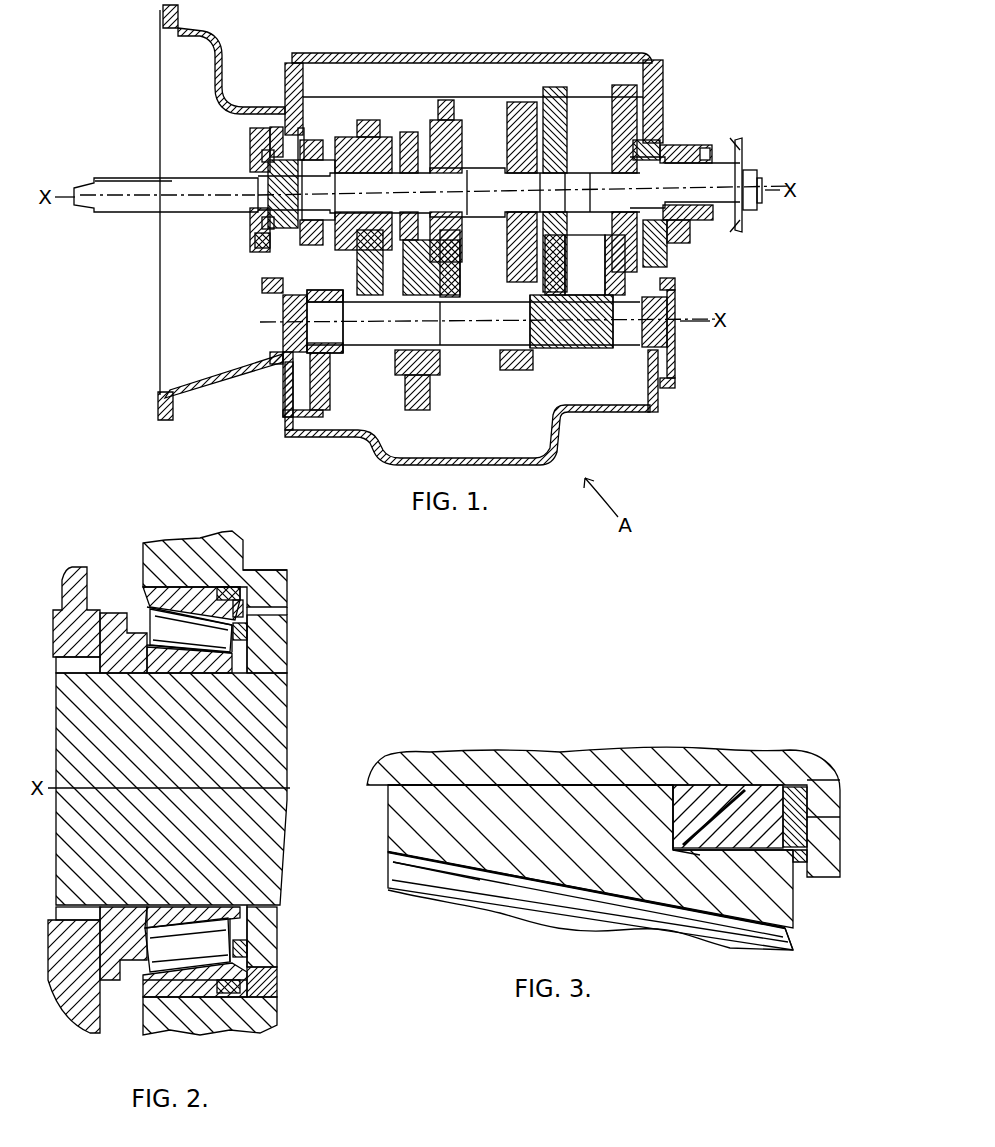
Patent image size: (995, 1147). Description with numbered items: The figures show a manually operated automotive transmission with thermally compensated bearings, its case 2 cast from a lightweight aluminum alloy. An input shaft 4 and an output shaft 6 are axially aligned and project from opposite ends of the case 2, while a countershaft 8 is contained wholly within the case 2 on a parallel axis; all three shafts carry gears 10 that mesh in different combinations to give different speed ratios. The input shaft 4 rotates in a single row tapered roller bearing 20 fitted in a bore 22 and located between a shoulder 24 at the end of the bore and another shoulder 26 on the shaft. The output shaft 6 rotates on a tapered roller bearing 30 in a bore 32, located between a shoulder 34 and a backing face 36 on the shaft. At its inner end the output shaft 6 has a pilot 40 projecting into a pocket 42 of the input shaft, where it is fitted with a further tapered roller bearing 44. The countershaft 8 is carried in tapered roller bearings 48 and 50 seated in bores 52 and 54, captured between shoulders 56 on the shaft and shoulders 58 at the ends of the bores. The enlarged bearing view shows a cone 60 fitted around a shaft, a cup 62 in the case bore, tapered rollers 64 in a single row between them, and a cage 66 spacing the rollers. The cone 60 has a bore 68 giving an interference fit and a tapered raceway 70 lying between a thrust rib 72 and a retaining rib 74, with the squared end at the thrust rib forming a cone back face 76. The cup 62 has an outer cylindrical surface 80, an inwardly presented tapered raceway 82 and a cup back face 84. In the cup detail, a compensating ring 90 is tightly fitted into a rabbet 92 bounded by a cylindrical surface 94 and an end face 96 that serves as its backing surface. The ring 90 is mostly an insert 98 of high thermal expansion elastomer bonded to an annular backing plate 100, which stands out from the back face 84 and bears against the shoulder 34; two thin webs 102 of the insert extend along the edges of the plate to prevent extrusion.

In FIG. 1, the case 2 is at (446, 48).
In FIG. 2, the case 2 is at (287, 577).
In FIG. 3, the case 2 is at (582, 752).
In FIG. 1, the input shaft 4 is at (103, 226).
In FIG. 1, the output shaft 6 is at (707, 170).
In FIG. 2, the output shaft 6 is at (67, 820).
In FIG. 1, the countershaft 8 is at (471, 343).
In FIG. 1, the gears 10 is at (297, 140).
In FIG. 1, the single row tapered roller bearing 20 is at (260, 237).
In FIG. 1, the bore 22 is at (277, 127).
In FIG. 1, the shoulder 24 is at (263, 147).
In FIG. 1, the shoulder 26 is at (303, 140).
In FIG. 1, the single row tapered roller bearing 30 is at (670, 243).
In FIG. 2, the single row tapered roller bearing 30 is at (266, 954).
In FIG. 1, the bore 32 is at (650, 140).
In FIG. 2, the bore 32 is at (187, 993).
In FIG. 3, the bore 32 is at (542, 787).
In FIG. 1, the shoulder 34 is at (658, 142).
In FIG. 2, the shoulder 34 is at (247, 573).
In FIG. 3, the shoulder 34 is at (807, 817).
In FIG. 1, the backing face 36 is at (625, 212).
In FIG. 2, the backing face 36 is at (115, 660).
In FIG. 1, the pilot 40 is at (327, 187).
In FIG. 1, the pocket 42 is at (260, 253).
In FIG. 1, the tapered roller bearing 44 is at (325, 143).
In FIG. 1, the single row tapered roller bearing 48 is at (267, 288).
In FIG. 1, the single row tapered roller bearing 50 is at (660, 283).
In FIG. 1, the bore 52 is at (282, 382).
In FIG. 1, the bore 54 is at (670, 390).
In FIG. 1, the shoulders 56 is at (283, 312).
In FIG. 1, the shoulders 58 is at (267, 358).
In FIG. 2, the cone 60 is at (178, 667).
In FIG. 2, the cup 62 is at (178, 583).
In FIG. 3, the cup 62 is at (547, 877).
In FIG. 2, the tapered rollers 64 is at (240, 660).
In FIG. 2, the cage 66 is at (257, 640).
In FIG. 2, the bore 68 is at (150, 673).
In FIG. 2, the tapered raceway 70 is at (207, 673).
In FIG. 2, the thrust rib 72 is at (127, 637).
In FIG. 2, the retaining rib 74 is at (287, 653).
In FIG. 2, the cone back face 76 is at (100, 637).
In FIG. 2, the cylindrical surface 80 is at (157, 587).
In FIG. 3, the cylindrical surface 80 is at (507, 783).
In FIG. 2, the tapered raceway 82 is at (193, 617).
In FIG. 3, the tapered raceway 82 is at (483, 872).
In FIG. 2, the cup back face 84 is at (253, 620).
In FIG. 3, the cup back face 84 is at (795, 950).
In FIG. 2, the compensating ring 90 is at (240, 593).
In FIG. 3, the compensating ring 90 is at (726, 763).
In FIG. 2, the rabbet 92 is at (217, 587).
In FIG. 3, the rabbet 92 is at (682, 833).
In FIG. 3, the cylindrical surface 94 is at (733, 843).
In FIG. 3, the end face 96 is at (680, 855).
In FIG. 3, the insert 98 is at (743, 793).
In FIG. 3, the backing plate 100 is at (807, 780).
In FIG. 3, the webs 102 is at (793, 787).